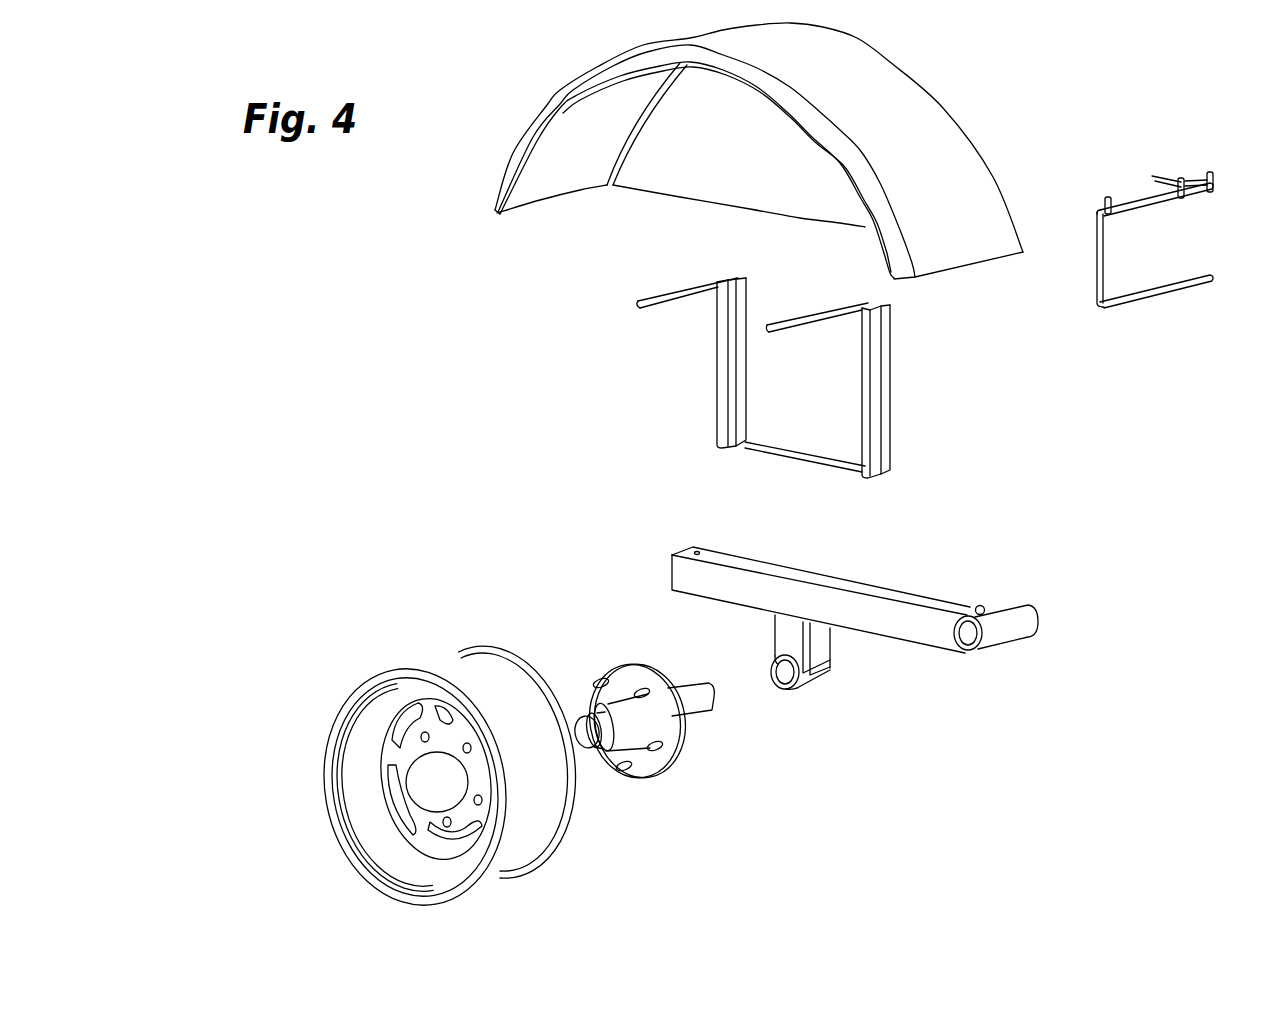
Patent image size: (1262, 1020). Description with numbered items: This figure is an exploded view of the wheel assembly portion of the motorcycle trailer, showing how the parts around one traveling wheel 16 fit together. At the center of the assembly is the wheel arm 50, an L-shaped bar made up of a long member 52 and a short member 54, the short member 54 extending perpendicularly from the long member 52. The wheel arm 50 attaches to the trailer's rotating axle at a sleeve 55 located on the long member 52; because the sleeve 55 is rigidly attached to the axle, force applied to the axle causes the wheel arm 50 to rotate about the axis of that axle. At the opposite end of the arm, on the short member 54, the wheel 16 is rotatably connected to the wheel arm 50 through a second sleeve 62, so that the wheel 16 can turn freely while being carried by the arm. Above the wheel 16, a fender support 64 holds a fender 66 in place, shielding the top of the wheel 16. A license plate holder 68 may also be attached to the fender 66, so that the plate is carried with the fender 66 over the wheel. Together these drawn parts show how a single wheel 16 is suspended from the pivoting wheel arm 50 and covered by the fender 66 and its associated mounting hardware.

The traveling wheel 16 is at (628, 847).
The wheel arm 50 is at (941, 649).
The long member 52 is at (847, 580).
The short member 54 is at (815, 653).
The sleeve 55 is at (1012, 645).
The second sleeve 62 is at (802, 687).
The fender support 64 is at (887, 395).
The fender 66 is at (948, 108).
The license plate holder 68 is at (1137, 295).